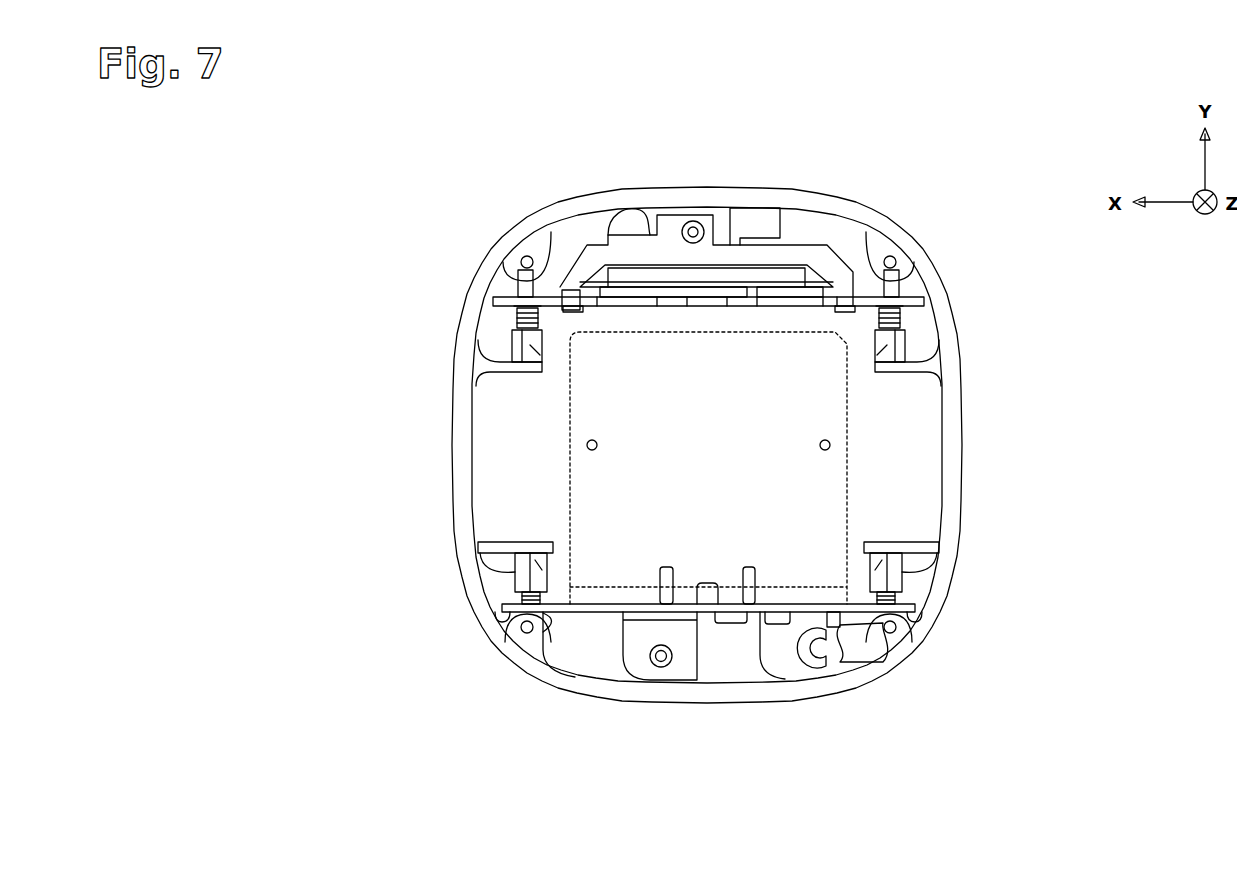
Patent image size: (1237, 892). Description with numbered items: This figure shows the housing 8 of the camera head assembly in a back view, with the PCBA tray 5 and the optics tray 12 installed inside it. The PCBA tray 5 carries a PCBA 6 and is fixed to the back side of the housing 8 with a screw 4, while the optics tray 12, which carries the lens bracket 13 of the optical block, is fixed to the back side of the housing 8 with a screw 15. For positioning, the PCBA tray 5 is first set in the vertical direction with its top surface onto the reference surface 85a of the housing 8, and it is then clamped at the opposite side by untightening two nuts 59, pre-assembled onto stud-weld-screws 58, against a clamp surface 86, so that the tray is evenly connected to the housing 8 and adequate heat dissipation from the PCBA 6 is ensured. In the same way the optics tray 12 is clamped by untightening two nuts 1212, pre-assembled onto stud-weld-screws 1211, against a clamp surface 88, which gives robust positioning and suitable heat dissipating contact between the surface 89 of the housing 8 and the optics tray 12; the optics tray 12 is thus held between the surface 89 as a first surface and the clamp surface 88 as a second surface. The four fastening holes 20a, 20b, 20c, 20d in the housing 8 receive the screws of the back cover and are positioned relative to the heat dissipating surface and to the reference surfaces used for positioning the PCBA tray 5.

The screw 4 is at (688, 223).
The PCBA tray 5 is at (598, 287).
The PCBA 6 is at (718, 285).
The housing 8 is at (955, 460).
The optics tray 12 is at (758, 613).
The lens bracket 13 is at (608, 465).
The screw 15 is at (656, 660).
The fastening hole 20a is at (521, 257).
The fastening hole 20b is at (895, 257).
The fastening hole 20c is at (520, 632).
The fastening hole 20d is at (895, 632).
The stud-weld-screw 58 is at (517, 320).
The nut 59 is at (512, 350).
The reference surface 85a is at (488, 310).
The clamp surface 86 is at (485, 358).
The clamp surface 88 is at (490, 546).
The surface 89 is at (493, 609).
The stud-weld-screw 1211 is at (520, 598).
The nut 1212 is at (515, 575).